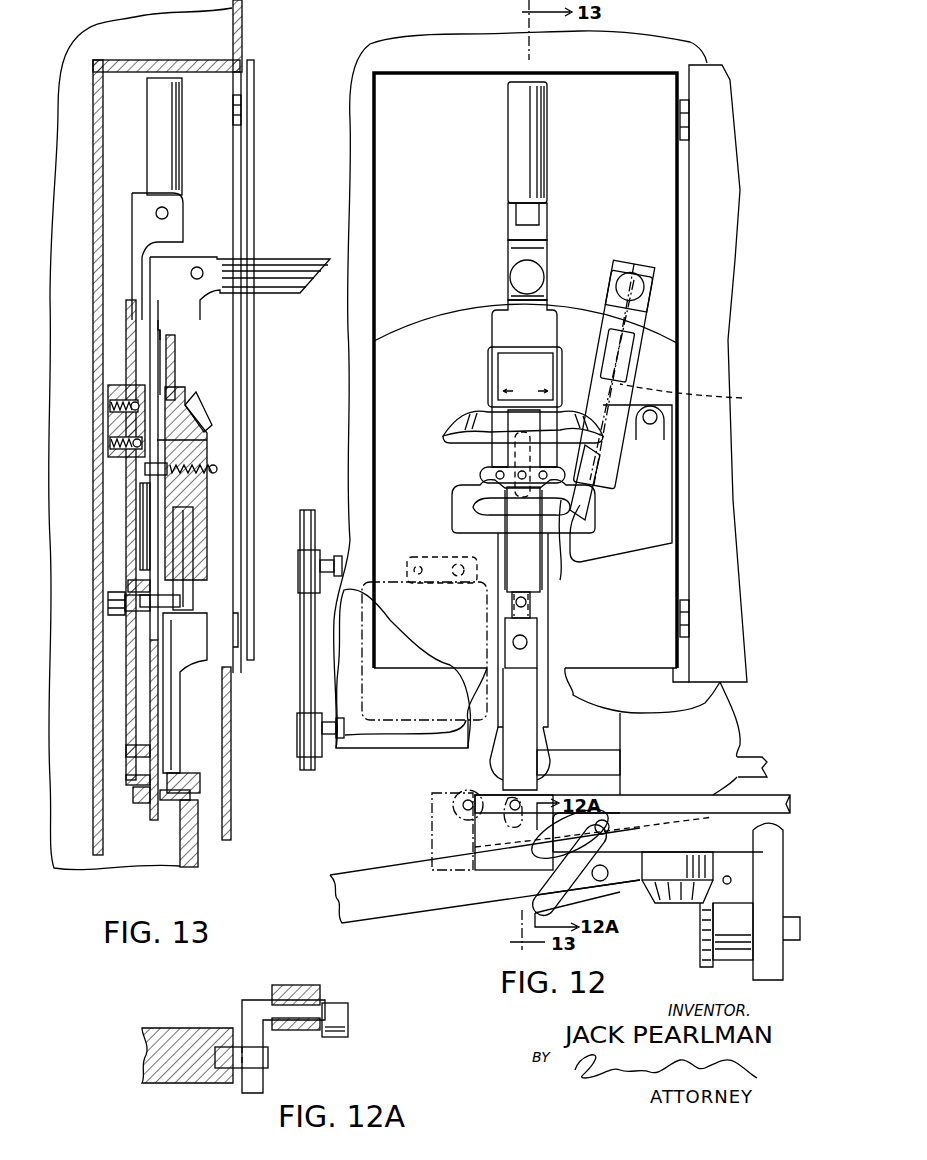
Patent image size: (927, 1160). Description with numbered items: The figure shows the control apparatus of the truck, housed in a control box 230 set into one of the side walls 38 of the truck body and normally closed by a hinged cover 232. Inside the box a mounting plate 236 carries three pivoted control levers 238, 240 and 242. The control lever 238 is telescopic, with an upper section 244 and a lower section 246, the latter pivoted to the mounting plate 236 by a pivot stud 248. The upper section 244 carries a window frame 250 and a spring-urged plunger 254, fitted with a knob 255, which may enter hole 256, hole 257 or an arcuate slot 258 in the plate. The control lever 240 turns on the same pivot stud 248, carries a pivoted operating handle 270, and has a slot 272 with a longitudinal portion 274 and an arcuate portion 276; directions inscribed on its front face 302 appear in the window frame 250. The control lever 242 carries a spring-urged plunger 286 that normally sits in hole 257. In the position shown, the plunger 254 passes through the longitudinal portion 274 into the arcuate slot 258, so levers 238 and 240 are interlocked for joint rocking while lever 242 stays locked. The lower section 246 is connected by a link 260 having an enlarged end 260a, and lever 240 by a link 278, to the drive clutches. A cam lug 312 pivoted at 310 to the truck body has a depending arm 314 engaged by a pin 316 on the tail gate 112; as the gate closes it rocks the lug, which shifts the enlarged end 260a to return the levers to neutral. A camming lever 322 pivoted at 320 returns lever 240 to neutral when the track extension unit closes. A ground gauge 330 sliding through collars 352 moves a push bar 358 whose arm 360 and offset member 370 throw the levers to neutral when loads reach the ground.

In FIG. 13, the side wall 38 is at (238, 28).
In FIG. 12, the side wall 38 is at (660, 46).
In FIG. 12, the tail gate 112 is at (410, 900).
In FIG. 12A, the tail gate 112 is at (176, 1032).
In FIG. 12, the control box 230 is at (660, 175).
In FIG. 13, the hinged cover 232 is at (255, 155).
In FIG. 12, the hinged cover 232 is at (716, 238).
In FIG. 13, the mounting plate 236 is at (165, 342).
In FIG. 12, the mounting plate 236 is at (426, 330).
In FIG. 13, the control lever 238 is at (212, 598).
In FIG. 12, the control lever 238 is at (445, 602).
In FIG. 13, the control lever 240 is at (180, 316).
In FIG. 12, the control lever 240 is at (620, 348).
In FIG. 13, the control lever 242 is at (118, 278).
In FIG. 13, the upper section 244 is at (208, 497).
In FIG. 12, the upper section 244 is at (515, 535).
In FIG. 13, the lower section 246 is at (168, 732).
In FIG. 12, the lower section 246 is at (512, 632).
In FIG. 13, the pivot stud 248 is at (160, 632).
In FIG. 12, the pivot stud 248 is at (530, 642).
In FIG. 12, the window frame 250 is at (488, 380).
In FIG. 13, the spring-urged plunger 254 is at (140, 493).
In FIG. 12, the spring-urged plunger 254 is at (480, 498).
In FIG. 13, the knob 255 is at (218, 469).
In FIG. 13, the hole 256 is at (147, 500).
In FIG. 13, the hole 257 is at (148, 470).
In FIG. 13, the arcuate slot 258 is at (200, 495).
In FIG. 12, the arcuate slot 258 is at (484, 477).
In FIG. 13, the link 260 is at (183, 868).
In FIG. 12, the link 260 is at (640, 796).
In FIG. 12, the enlarged end 260a is at (505, 870).
In FIG. 13, the operating handle 270 is at (280, 258).
In FIG. 13, the slot 272 is at (208, 440).
In FIG. 12, the slot 272 is at (578, 528).
In FIG. 13, the longitudinal portion 274 is at (210, 456).
In FIG. 12, the longitudinal portion 274 is at (512, 458).
In FIG. 12, the arcuate portion 276 is at (480, 512).
In FIG. 13, the link 278 is at (140, 804).
In FIG. 13, the spring-urged plunger 286 is at (110, 436).
In FIG. 13, the front face 302 is at (175, 372).
In FIG. 12, the front face 302 is at (492, 342).
In FIG. 12, the pivot 310 is at (600, 815).
In FIG. 12A, the pivot 310 is at (296, 992).
In FIG. 12, the cam lug 312 is at (498, 900).
In FIG. 12A, the cam lug 312 is at (334, 1004).
In FIG. 12, the depending arm 314 is at (548, 895).
In FIG. 12A, the depending arm 314 is at (264, 1080).
In FIG. 12, the pin 316 is at (620, 890).
In FIG. 12A, the pin 316 is at (270, 1056).
In FIG. 12, the pivot 320 is at (658, 417).
In FIG. 12, the camming lever 322 is at (608, 552).
In FIG. 12, the ground gauge 330 is at (298, 704).
In FIG. 12, the collars 352 is at (458, 442).
In FIG. 12, the push bar 358 is at (364, 637).
In FIG. 12, the arm 360 is at (392, 746).
In FIG. 12, the offset member 370 is at (428, 566).